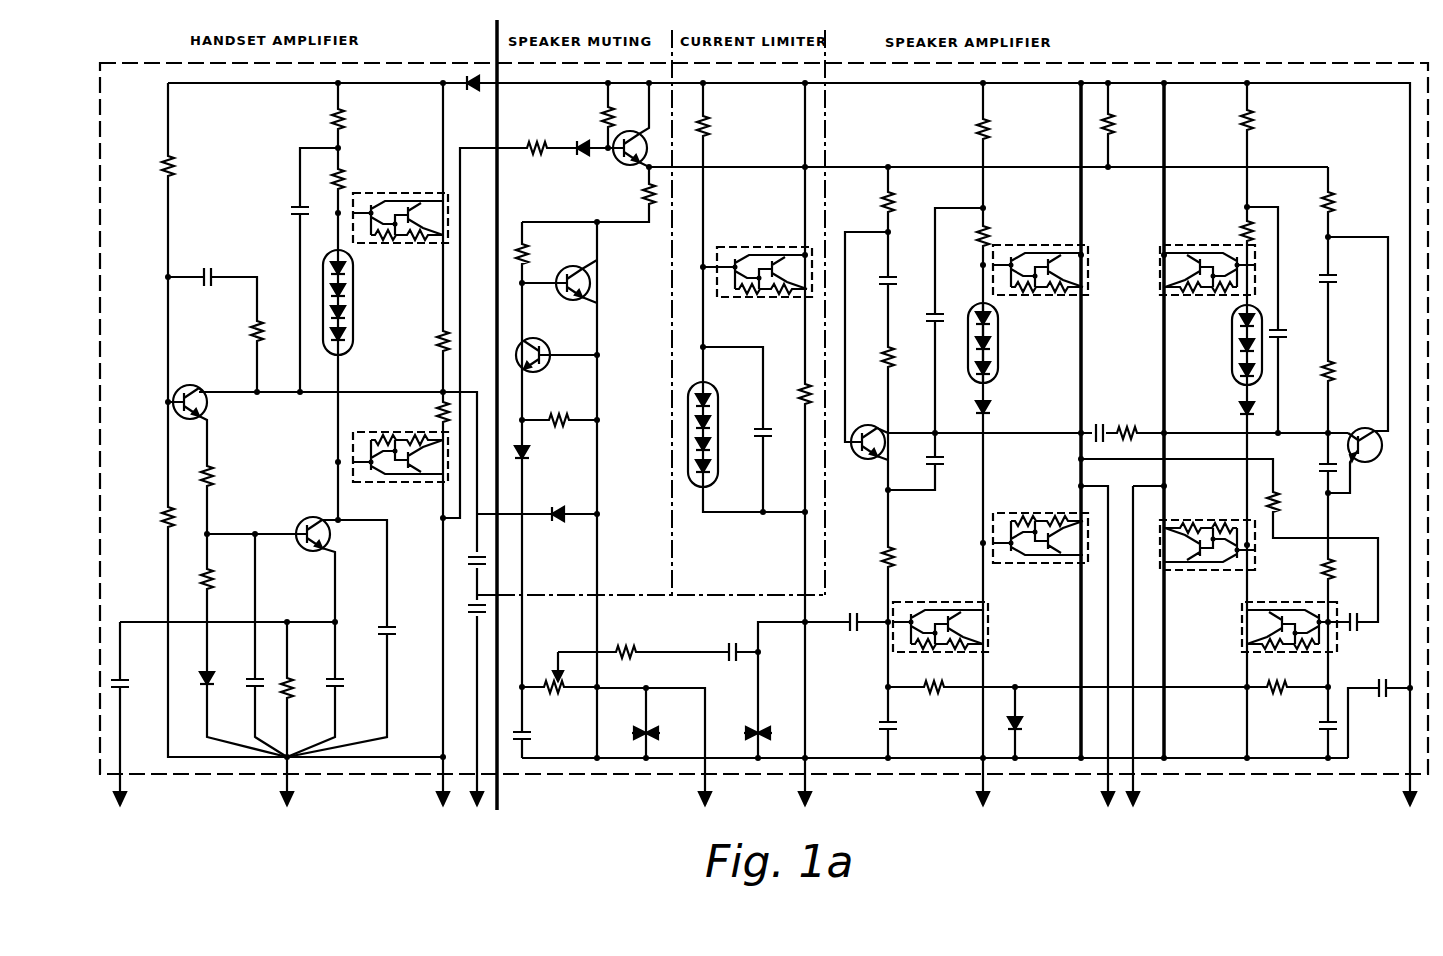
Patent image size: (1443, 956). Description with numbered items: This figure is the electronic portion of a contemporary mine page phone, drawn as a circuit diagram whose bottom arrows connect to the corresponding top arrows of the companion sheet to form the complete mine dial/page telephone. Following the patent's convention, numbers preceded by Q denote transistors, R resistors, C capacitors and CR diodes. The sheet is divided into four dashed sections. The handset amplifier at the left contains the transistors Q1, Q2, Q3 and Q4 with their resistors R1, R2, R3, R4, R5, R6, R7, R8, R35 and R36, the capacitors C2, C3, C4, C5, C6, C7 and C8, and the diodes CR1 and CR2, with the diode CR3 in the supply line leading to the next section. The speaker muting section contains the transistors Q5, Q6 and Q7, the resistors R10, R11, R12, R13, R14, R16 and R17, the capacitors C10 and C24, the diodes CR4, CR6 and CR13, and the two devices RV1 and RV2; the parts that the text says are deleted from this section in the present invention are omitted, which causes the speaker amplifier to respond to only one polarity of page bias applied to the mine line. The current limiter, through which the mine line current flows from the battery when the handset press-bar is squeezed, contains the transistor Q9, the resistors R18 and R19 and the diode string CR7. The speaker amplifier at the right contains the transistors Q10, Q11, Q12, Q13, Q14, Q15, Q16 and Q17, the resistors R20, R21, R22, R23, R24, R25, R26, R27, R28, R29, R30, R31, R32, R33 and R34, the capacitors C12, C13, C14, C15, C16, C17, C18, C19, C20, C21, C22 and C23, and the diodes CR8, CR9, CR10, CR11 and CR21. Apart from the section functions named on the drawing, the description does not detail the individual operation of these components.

The resistor R1 is at (153, 169).
The resistor R2 is at (149, 518).
The resistor R3 is at (222, 477).
The resistor R4 is at (222, 580).
The resistor R5 is at (241, 332).
The resistor R6 is at (300, 689).
The resistor R7 is at (352, 120).
The resistor R8 is at (352, 180).
The resistor R10 is at (540, 137).
The resistor R11 is at (540, 255).
The resistor R12 is at (563, 411).
The resistor R13 is at (553, 698).
The resistor R14 is at (592, 118).
The resistor R16 is at (630, 641).
The resistor R17 is at (630, 195).
The resistor R18 is at (723, 127).
The resistor R19 is at (790, 395).
The resistor R20 is at (868, 203).
The resistor R21 is at (873, 358).
The resistor R22 is at (907, 558).
The resistor R23 is at (933, 700).
The resistor R24 is at (1005, 130).
The resistor R25 is at (966, 237).
The resistor R26 is at (1127, 125).
The resistor R27 is at (1137, 418).
The resistor R28 is at (1225, 121).
The resistor R29 is at (1349, 203).
The resistor R30 is at (1228, 232).
The resistor R31 is at (1292, 503).
The resistor R32 is at (1283, 677).
The resistor R33 is at (1348, 372).
The resistor R34 is at (1347, 570).
The resistor R35 is at (422, 342).
The resistor R36 is at (422, 413).
The capacitor C2 is at (208, 267).
The capacitor C3 is at (264, 690).
The capacitor C4 is at (282, 215).
The capacitor C5 is at (347, 690).
The capacitor C6 is at (398, 639).
The capacitor C7 is at (466, 560).
The capacitor C8 is at (466, 608).
The capacitor C10 is at (538, 740).
The capacitor C12 is at (843, 634).
The capacitor C13 is at (872, 287).
The capacitor C14 is at (867, 720).
The capacitor C15 is at (922, 326).
The capacitor C16 is at (951, 470).
The capacitor C17 is at (1106, 420).
The capacitor C18 is at (1294, 343).
The capacitor C19 is at (1349, 271).
The capacitor C20 is at (1313, 465).
The capacitor C21 is at (1305, 723).
The capacitor C22 is at (1361, 630).
The capacitor C23 is at (1376, 702).
The capacitor C24 is at (730, 643).
The diode CR1 is at (189, 685).
The diode CR2 is at (358, 302).
The diode CR3 is at (472, 96).
The diode CR4 is at (544, 455).
The diode CR6 is at (578, 162).
The diode CR7 is at (717, 423).
The diode CR8 is at (1003, 343).
The diode CR9 is at (1006, 405).
The diode CR10 is at (1041, 727).
The diode CR11 is at (1226, 345).
The diode CR13 is at (556, 526).
The diode CR21 is at (1222, 405).
The transistor Q1 is at (191, 391).
The transistor Q2 is at (311, 525).
The transistor Q3 is at (400, 206).
The transistor Q4 is at (400, 467).
The transistor Q5 is at (545, 349).
The transistor Q6 is at (589, 283).
The transistor Q7 is at (629, 138).
The transistor Q9 is at (764, 260).
The transistor Q10 is at (860, 454).
The transistor Q11 is at (940, 616).
The transistor Q12 is at (1040, 259).
The transistor Q13 is at (1040, 528).
The transistor Q14 is at (1184, 270).
The transistor Q15 is at (1207, 531).
The transistor Q16 is at (1289, 617).
The transistor Q17 is at (1364, 435).
The varistor RV1 is at (630, 720).
The varistor RV2 is at (772, 720).